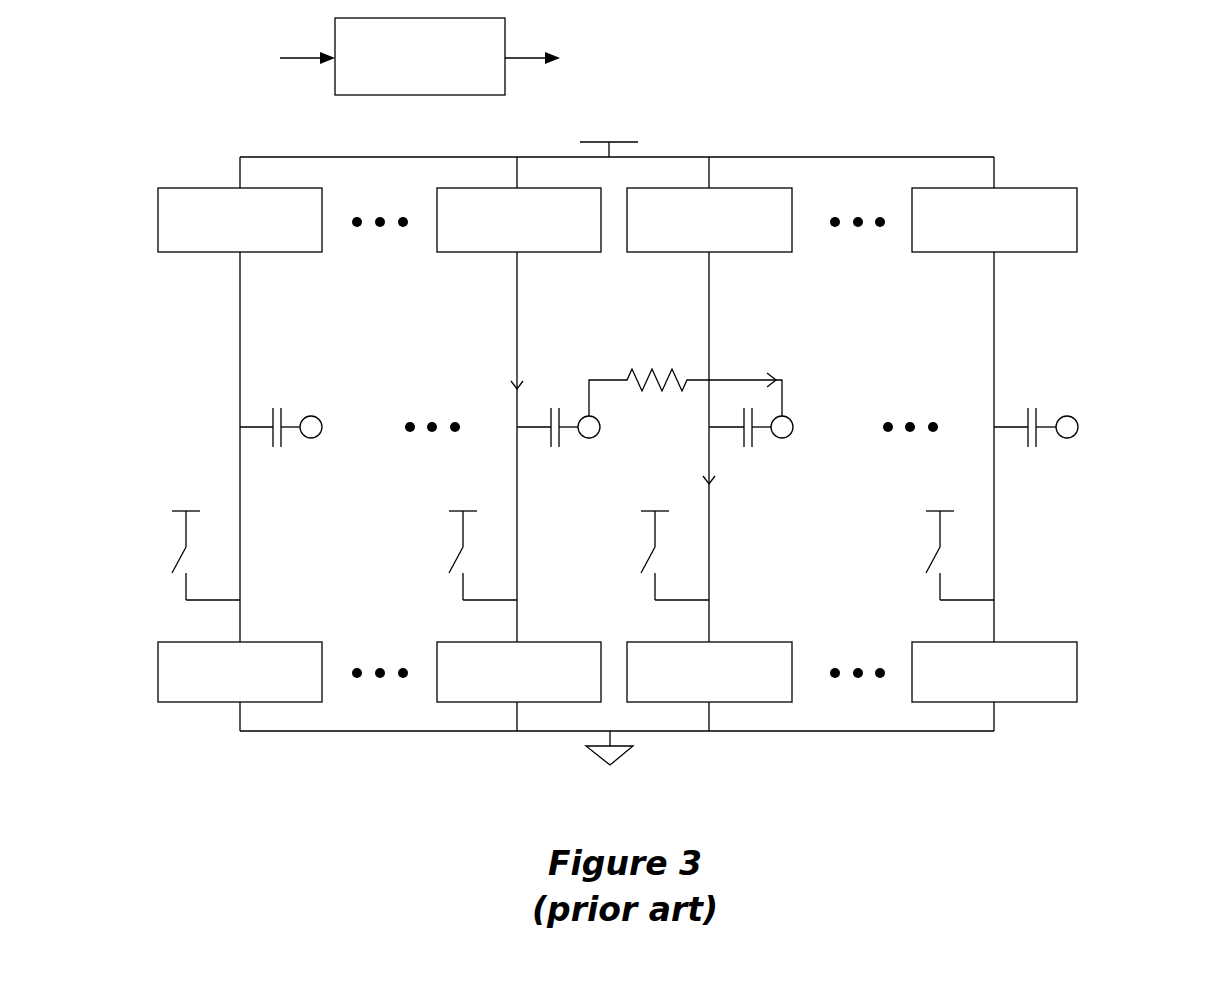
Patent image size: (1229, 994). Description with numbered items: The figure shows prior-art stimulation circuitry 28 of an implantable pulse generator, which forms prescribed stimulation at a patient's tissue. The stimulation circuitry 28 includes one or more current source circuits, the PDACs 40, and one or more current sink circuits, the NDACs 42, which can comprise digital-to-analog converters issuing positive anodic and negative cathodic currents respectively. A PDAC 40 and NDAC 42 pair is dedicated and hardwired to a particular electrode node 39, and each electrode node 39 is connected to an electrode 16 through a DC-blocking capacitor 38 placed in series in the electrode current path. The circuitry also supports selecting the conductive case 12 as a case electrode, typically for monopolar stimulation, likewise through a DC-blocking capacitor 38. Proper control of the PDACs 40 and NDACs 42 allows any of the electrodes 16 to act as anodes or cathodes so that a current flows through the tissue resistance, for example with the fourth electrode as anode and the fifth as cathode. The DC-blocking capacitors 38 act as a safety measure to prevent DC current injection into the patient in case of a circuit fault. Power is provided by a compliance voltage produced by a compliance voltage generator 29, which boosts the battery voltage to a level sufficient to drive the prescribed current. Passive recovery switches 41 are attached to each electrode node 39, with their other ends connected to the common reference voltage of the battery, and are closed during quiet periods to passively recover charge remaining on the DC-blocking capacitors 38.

The stimulation circuitry 28 is at (671, 393).
The compliance voltage generator 29 is at (415, 56).
The current source circuit (PDAC) 40 is at (617, 220).
The current sink circuit (NDAC) 42 is at (617, 672).
The DC-blocking capacitor 38 is at (648, 429).
The electrode node 39 is at (1028, 290).
The passive recovery switch 41 is at (558, 550).
The electrode 16 is at (569, 429).
The conductive case 12 is at (1111, 429).